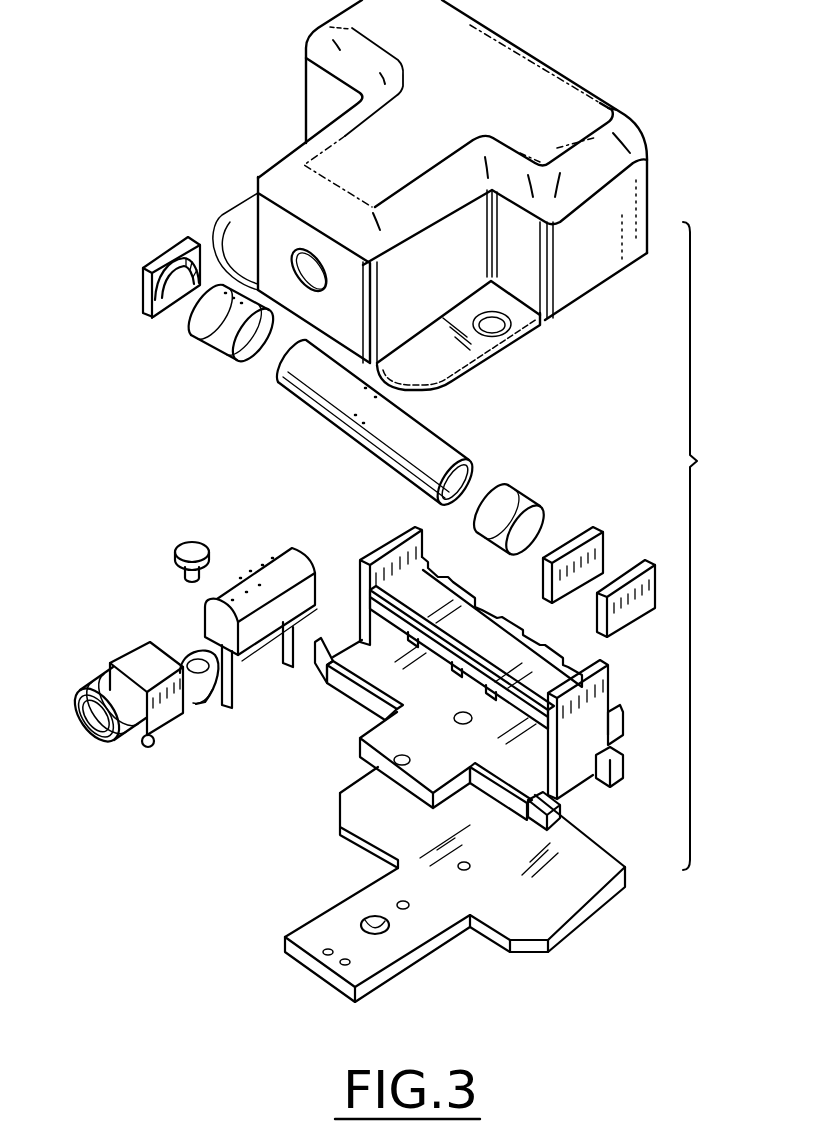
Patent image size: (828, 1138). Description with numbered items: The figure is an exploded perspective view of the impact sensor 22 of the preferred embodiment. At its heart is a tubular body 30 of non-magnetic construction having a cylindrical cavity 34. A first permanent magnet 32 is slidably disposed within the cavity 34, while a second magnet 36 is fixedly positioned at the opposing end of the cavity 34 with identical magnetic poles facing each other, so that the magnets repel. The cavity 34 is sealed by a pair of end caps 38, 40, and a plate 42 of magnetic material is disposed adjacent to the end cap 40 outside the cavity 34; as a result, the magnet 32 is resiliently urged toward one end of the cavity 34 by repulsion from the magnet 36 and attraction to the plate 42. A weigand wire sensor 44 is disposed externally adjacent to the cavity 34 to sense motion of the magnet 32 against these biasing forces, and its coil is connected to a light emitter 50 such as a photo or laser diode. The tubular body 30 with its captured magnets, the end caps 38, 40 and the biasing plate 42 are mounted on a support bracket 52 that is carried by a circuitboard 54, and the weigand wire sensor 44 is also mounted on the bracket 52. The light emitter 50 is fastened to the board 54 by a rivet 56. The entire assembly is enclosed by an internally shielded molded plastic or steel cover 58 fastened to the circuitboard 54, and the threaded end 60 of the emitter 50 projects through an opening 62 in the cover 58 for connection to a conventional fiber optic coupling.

The sensor 22 is at (143, 110).
The tubular body 30 is at (360, 434).
The first permanent magnet 32 is at (512, 492).
The cylindrical cavity 34 is at (452, 474).
The second magnet 36 is at (227, 350).
The end cap 38 is at (143, 290).
The end cap 40 is at (581, 529).
The plate 42 is at (631, 568).
The weigand wire sensor 44 is at (291, 550).
The light emitter 50 is at (141, 648).
The support bracket 52 is at (605, 690).
The circuitboard 54 is at (577, 843).
The rivet 56 is at (187, 545).
The cover 58 is at (566, 74).
The threaded end 60 is at (135, 730).
The opening 62 is at (300, 270).